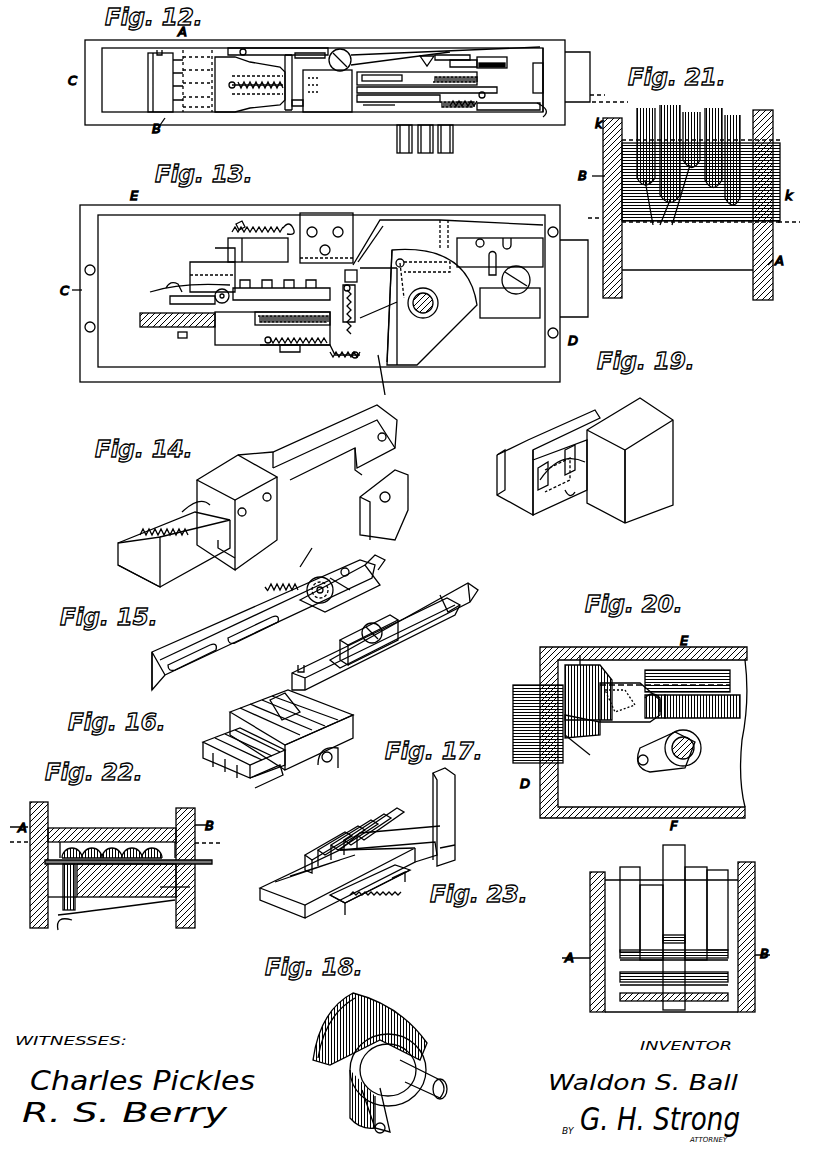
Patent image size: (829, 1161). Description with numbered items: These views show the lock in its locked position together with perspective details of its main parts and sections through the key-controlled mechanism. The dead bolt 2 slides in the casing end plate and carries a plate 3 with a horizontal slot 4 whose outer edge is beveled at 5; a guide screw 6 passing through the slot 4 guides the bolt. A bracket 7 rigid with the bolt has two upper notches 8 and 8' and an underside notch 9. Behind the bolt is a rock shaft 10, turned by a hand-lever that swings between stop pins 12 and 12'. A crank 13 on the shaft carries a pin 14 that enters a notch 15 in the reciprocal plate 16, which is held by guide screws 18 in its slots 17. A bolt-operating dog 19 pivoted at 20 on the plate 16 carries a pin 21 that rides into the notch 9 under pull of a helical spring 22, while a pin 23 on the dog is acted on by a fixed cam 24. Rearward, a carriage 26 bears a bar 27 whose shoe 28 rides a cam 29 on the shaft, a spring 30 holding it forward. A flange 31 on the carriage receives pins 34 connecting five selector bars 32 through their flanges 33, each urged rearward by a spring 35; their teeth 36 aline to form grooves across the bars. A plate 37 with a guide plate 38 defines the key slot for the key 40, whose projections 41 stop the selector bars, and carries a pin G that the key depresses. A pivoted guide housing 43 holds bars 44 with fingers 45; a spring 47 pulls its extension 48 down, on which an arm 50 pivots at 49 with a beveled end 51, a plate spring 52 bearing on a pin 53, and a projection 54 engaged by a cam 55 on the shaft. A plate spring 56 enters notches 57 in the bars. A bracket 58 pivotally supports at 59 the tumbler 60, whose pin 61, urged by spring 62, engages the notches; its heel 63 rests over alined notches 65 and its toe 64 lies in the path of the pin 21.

In FIG. 12, the dead bolt 2 is at (596, 77).
In FIG. 13, the dead bolt 2 is at (574, 278).
In FIG. 19, the dead bolt 2 is at (630, 460).
In FIG. 20, the dead bolt 2 is at (538, 724).
In FIG. 12, the plate 3 is at (548, 45).
In FIG. 13, the plate 3 is at (522, 312).
In FIG. 19, the plate 3 is at (550, 440).
In FIG. 19, the slot 4 is at (562, 465).
In FIG. 12, the beveled edge 5 is at (470, 58).
In FIG. 19, the beveled edge 5 is at (497, 476).
In FIG. 12, the guide screw 6 is at (493, 56).
In FIG. 13, the guide screw 6 is at (516, 287).
In FIG. 12, the bracket 7 is at (537, 96).
In FIG. 13, the bracket 7 is at (500, 252).
In FIG. 19, the bracket 7 is at (552, 512).
In FIG. 12, the notch 8 is at (527, 78).
In FIG. 13, the notch 8 is at (517, 231).
In FIG. 19, the notch 8 is at (580, 455).
In FIG. 20, the notch 8 is at (550, 663).
In FIG. 13, the notch 8' is at (498, 220).
In FIG. 19, the notch 8' is at (538, 469).
In FIG. 13, the notch 9 is at (299, 283).
In FIG. 19, the notch 9 is at (577, 505).
In FIG. 12, the rock shaft 10 is at (426, 153).
In FIG. 13, the rock shaft 10 is at (428, 312).
In FIG. 20, the rock shaft 10 is at (695, 750).
In FIG. 18, the rock shaft 10 is at (443, 1084).
In FIG. 12, the stop pin 12 is at (398, 148).
In FIG. 12, the stop pin 12' is at (454, 145).
In FIG. 13, the crank 13 is at (407, 274).
In FIG. 20, the crank 13 is at (662, 770).
In FIG. 18, the crank 13 is at (365, 1128).
In FIG. 13, the pin 14 is at (395, 255).
In FIG. 20, the pin 14 is at (638, 762).
In FIG. 18, the pin 14 is at (383, 1132).
In FIG. 20, the notch 15 is at (652, 712).
In FIG. 12, the reciprocal plate 16 is at (390, 112).
In FIG. 15, the reciprocal plate 16 is at (263, 625).
In FIG. 20, the reciprocal plate 16 is at (740, 708).
In FIG. 15, the horizontal slots 17 is at (195, 662).
In FIG. 12, the guide screws 18 is at (362, 112).
In FIG. 12, the bolt-operating dog 19 is at (545, 117).
In FIG. 15, the bolt-operating dog 19 is at (355, 580).
In FIG. 20, the bolt-operating dog 19 is at (582, 738).
In FIG. 15, the pivot 20 is at (322, 596).
In FIG. 15, the pin 21 is at (342, 566).
In FIG. 20, the pin 21 is at (590, 740).
In FIG. 15, the helical spring 22 is at (288, 567).
In FIG. 15, the pin 23 is at (385, 555).
In FIG. 12, the fixed cam 24 is at (515, 112).
In FIG. 14, the fixed cam 24 is at (384, 505).
In FIG. 20, the fixed cam 24 is at (592, 668).
In FIG. 13, the carriage 26 is at (296, 340).
In FIG. 13, the bar 27 is at (378, 316).
In FIG. 17, the bar 27 is at (390, 842).
In FIG. 13, the bearing shoe 28 is at (323, 371).
In FIG. 17, the bearing shoe 28 is at (456, 805).
In FIG. 13, the cam 29 is at (432, 307).
In FIG. 18, the cam 29 is at (420, 1058).
In FIG. 13, the helical spring 30 is at (335, 358).
In FIG. 17, the flange 31 is at (408, 885).
In FIG. 13, the selector bars 32 is at (361, 309).
In FIG. 21, the selector bars 32 is at (687, 148).
In FIG. 17, the selector bars 32 is at (337, 884).
In FIG. 23, the selector bars 32 is at (668, 862).
In FIG. 13, the flange 33 is at (240, 325).
In FIG. 17, the flange 33 is at (338, 912).
In FIG. 17, the pin 34 is at (385, 895).
In FIG. 17, the helical spring 35 is at (368, 910).
In FIG. 13, the rectangular teeth 36 is at (281, 290).
In FIG. 17, the rectangular teeth 36 is at (350, 828).
In FIG. 23, the rectangular teeth 36 is at (640, 940).
In FIG. 13, the plate 37 is at (163, 320).
In FIG. 22, the plate 37 is at (132, 887).
In FIG. 13, the guide plate 38 is at (170, 299).
In FIG. 21, the guide plate 38 is at (688, 205).
In FIG. 21, the key 40 is at (772, 150).
In FIG. 22, the key 40 is at (137, 865).
In FIG. 21, the projections 41 is at (667, 204).
In FIG. 22, the projections 41 is at (125, 840).
In FIG. 12, the guide housing 43 is at (197, 81).
In FIG. 13, the guide housing 43 is at (200, 264).
In FIG. 16, the guide housing 43 is at (291, 730).
In FIG. 12, the bars 44 is at (258, 112).
In FIG. 13, the bars 44 is at (165, 284).
In FIG. 16, the bars 44 is at (241, 755).
In FIG. 13, the fingers 45 is at (339, 282).
In FIG. 16, the fingers 45 is at (345, 732).
In FIG. 23, the fingers 45 is at (690, 1005).
In FIG. 13, the helical spring 47 is at (365, 376).
In FIG. 12, the extension 48 is at (300, 48).
In FIG. 13, the extension 48 is at (351, 287).
In FIG. 16, the extension 48 is at (376, 645).
In FIG. 12, the pivot 49 is at (346, 50).
In FIG. 16, the pivot 49 is at (368, 625).
In FIG. 12, the arm 50 is at (392, 52).
In FIG. 12, the beveled end 51 is at (448, 54).
In FIG. 16, the beveled end 51 is at (468, 586).
In FIG. 12, the plate spring 52 is at (298, 54).
In FIG. 16, the plate spring 52 is at (342, 660).
In FIG. 12, the pin 53 is at (243, 48).
In FIG. 16, the pin 53 is at (291, 665).
In FIG. 12, the projection 54 is at (425, 52).
In FIG. 12, the cam 55 is at (460, 71).
In FIG. 13, the cam 55 is at (420, 340).
In FIG. 18, the cam 55 is at (370, 1026).
In FIG. 12, the plate spring 56 is at (152, 84).
In FIG. 16, the notches 57 is at (265, 785).
In FIG. 12, the bracket 58 is at (330, 112).
In FIG. 13, the bracket 58 is at (323, 216).
In FIG. 14, the bracket 58 is at (237, 512).
In FIG. 13, the pivot 59 is at (326, 245).
In FIG. 12, the tumbler 60 is at (327, 91).
In FIG. 13, the tumbler 60 is at (418, 220).
In FIG. 14, the tumbler 60 is at (317, 442).
In FIG. 16, the tumbler 60 is at (422, 615).
In FIG. 20, the tumbler 60 is at (730, 685).
In FIG. 12, the pin 61 is at (484, 92).
In FIG. 13, the pin 61 is at (482, 238).
In FIG. 14, the pin 61 is at (395, 441).
In FIG. 13, the helical spring 62 is at (265, 226).
In FIG. 14, the helical spring 62 is at (170, 525).
In FIG. 14, the heel 63 is at (140, 575).
In FIG. 13, the toe 64 is at (485, 305).
In FIG. 14, the toe 64 is at (358, 470).
In FIG. 16, the toe 64 is at (462, 607).
In FIG. 20, the toe 64 is at (622, 720).
In FIG. 16, the notches 65 is at (278, 700).
In FIG. 13, the pin G is at (176, 343).
In FIG. 22, the pin G is at (114, 921).